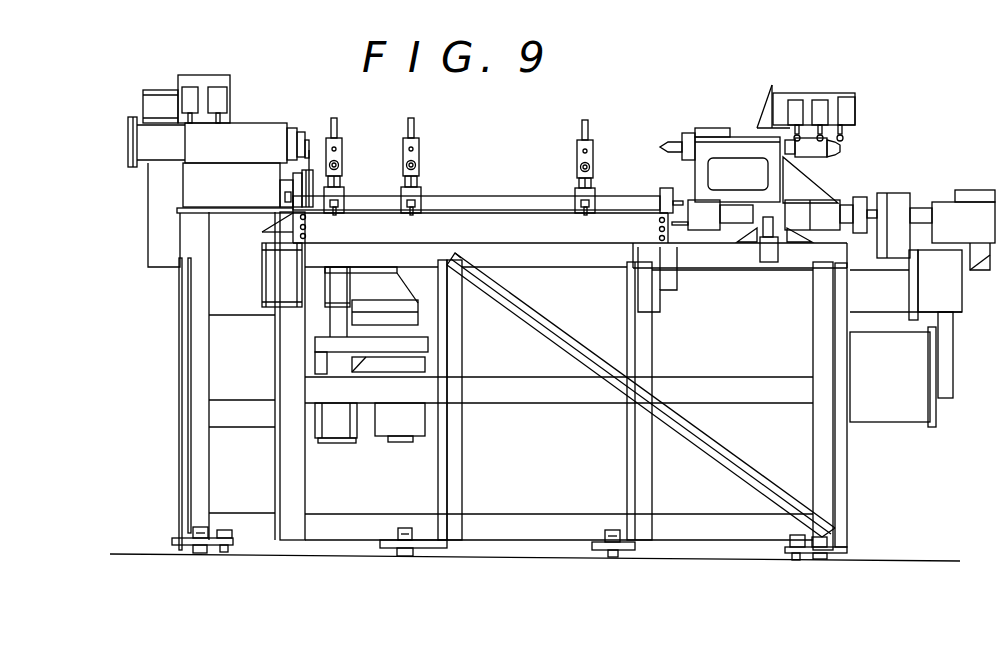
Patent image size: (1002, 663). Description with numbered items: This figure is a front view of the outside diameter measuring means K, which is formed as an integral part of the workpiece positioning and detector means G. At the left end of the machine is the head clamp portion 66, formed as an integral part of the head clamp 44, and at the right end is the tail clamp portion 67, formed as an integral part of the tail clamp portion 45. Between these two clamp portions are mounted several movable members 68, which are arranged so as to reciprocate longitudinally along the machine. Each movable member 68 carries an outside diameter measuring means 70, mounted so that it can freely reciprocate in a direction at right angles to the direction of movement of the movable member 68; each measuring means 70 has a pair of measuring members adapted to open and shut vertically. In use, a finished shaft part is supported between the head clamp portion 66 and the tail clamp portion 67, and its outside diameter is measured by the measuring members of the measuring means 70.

The head clamp 44 is at (220, 171).
The head clamp portion 66 is at (245, 122).
The tail clamp portion 45 is at (736, 174).
The tail clamp portion 67 is at (712, 127).
The outside diameter measuring means 70 is at (342, 143).
The movable member 68 is at (331, 195).
The workpiece positioning and detector means G is at (484, 145).
The outside diameter measuring means K is at (644, 95).